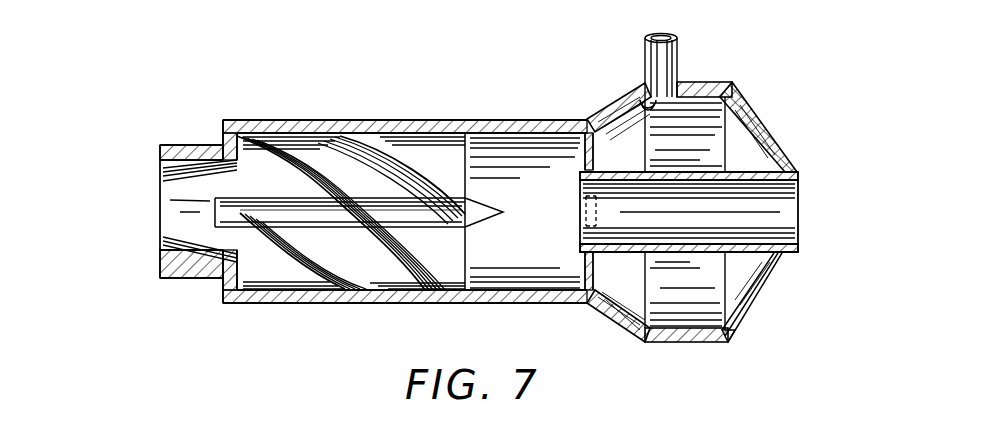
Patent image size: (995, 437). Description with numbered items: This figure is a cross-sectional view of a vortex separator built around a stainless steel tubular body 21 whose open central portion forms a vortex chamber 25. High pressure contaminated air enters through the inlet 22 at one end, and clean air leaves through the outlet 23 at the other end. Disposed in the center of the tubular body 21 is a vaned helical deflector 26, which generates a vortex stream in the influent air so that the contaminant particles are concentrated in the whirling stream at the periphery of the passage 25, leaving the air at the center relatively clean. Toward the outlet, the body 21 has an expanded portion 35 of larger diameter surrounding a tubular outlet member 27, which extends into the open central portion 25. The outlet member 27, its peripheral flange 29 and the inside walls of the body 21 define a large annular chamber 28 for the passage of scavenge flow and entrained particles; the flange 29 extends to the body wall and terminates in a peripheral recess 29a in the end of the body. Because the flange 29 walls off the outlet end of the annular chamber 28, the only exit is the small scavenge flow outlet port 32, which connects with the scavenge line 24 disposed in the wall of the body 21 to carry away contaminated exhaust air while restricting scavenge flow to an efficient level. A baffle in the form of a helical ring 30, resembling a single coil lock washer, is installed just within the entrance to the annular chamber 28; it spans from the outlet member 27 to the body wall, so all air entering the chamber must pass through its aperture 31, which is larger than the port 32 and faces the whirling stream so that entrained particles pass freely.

The tubular body 21 is at (274, 120).
The inlet 22 is at (170, 212).
The outlet 23 is at (798, 193).
The scavenge line 24 is at (678, 52).
The vortex chamber 25 is at (538, 253).
The vaned helical deflector 26 is at (365, 147).
The tubular outlet member 27 is at (688, 170).
The annular chamber 28 is at (690, 308).
The peripheral flange 29 is at (760, 125).
The peripheral recess 29a is at (730, 337).
The helical ring 30 is at (578, 148).
The aperture 31 is at (578, 207).
The scavenge flow outlet port 32 is at (647, 93).
The expanded portion 35 is at (718, 82).